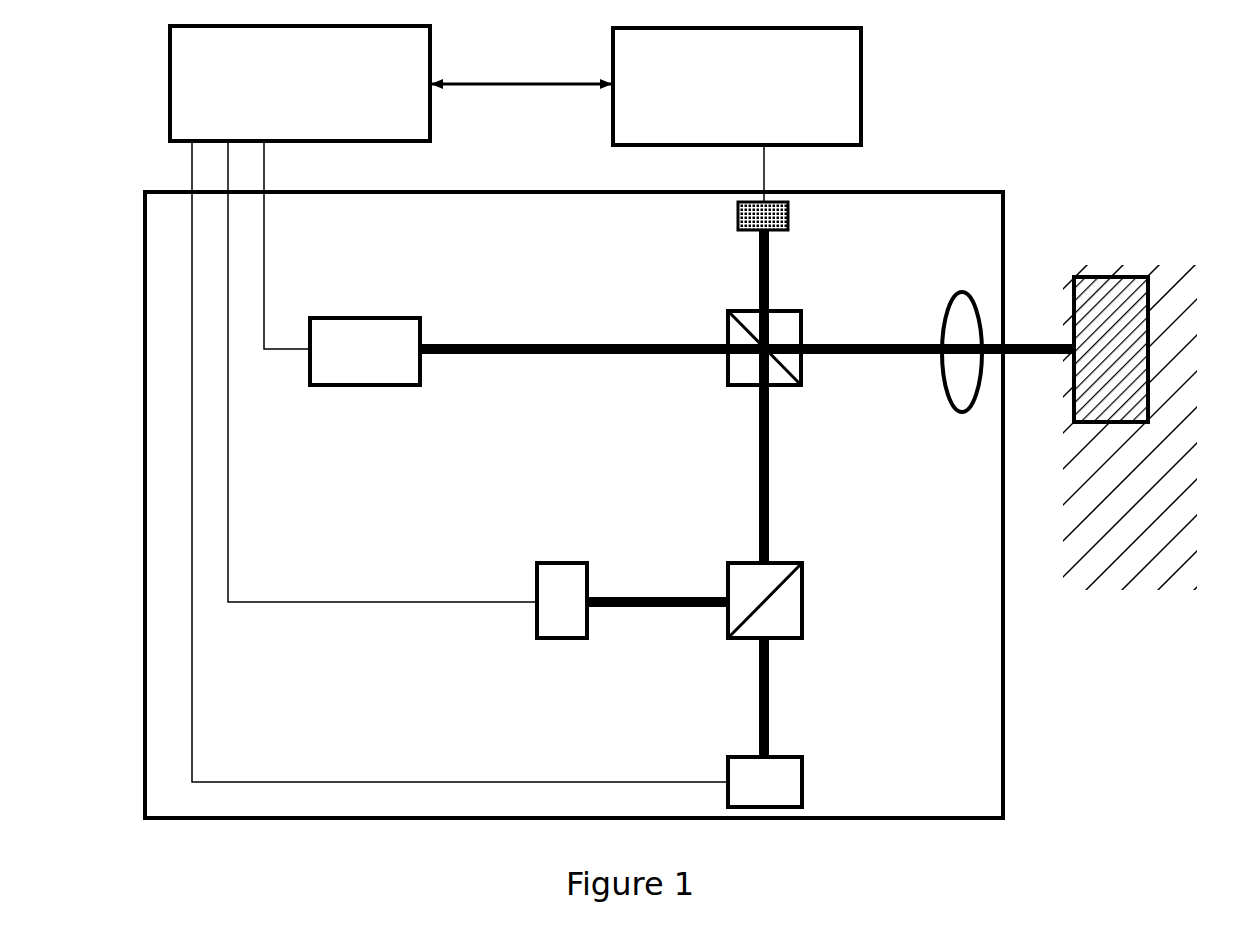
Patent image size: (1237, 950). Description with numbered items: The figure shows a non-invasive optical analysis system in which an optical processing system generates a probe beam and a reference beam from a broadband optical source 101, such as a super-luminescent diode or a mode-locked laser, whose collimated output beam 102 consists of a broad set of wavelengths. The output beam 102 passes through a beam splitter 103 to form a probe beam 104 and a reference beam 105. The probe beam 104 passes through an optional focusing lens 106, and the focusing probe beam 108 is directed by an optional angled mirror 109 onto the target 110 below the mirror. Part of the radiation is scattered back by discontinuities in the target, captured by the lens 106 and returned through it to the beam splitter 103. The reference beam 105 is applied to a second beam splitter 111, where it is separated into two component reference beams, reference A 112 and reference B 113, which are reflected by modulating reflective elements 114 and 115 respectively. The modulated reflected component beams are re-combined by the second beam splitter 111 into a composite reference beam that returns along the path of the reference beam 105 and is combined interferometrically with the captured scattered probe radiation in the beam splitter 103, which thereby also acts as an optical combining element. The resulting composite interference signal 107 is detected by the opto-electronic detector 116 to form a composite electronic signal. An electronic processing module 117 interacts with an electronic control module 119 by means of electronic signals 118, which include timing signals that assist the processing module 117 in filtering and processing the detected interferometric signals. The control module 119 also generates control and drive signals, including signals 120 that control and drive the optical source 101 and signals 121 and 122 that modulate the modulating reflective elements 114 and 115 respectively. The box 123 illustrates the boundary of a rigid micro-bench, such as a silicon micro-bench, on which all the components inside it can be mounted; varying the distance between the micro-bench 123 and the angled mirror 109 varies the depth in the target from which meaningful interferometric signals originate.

The broadband optical source 101 is at (377, 397).
The output beam 102 is at (525, 362).
The beam splitter 103 is at (713, 380).
The probe beam 104 is at (850, 335).
The reference beam 105 is at (775, 430).
The focusing lens 106 is at (970, 415).
The composite interference signal 107 is at (753, 278).
The focusing probe beam 108 is at (1035, 328).
The angled mirror 109 is at (1142, 268).
The target 110 is at (1150, 598).
The second beam splitter 111 is at (812, 590).
The component reference beam A 112 is at (775, 695).
The component reference beam B 113 is at (685, 588).
The modulating reflective element 114 is at (727, 748).
The modulating reflective element 115 is at (550, 555).
The opto-electronic detector 116 is at (738, 212).
The electronic processing module 117 is at (870, 58).
The electronic signals 118 is at (542, 98).
The electronic control module 119 is at (162, 73).
The optical source control signals 120 is at (277, 217).
The modulation signals 121 is at (452, 773).
The modulation signals 122 is at (345, 607).
The micro-bench boundary 123 is at (1015, 760).